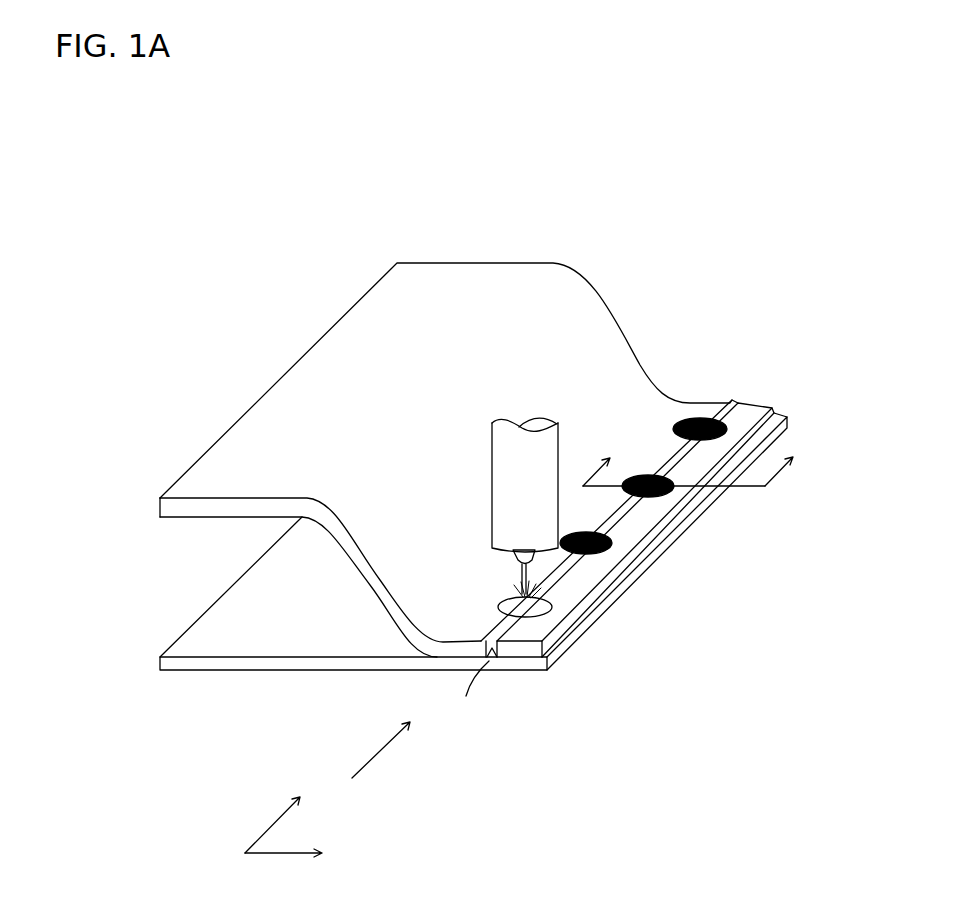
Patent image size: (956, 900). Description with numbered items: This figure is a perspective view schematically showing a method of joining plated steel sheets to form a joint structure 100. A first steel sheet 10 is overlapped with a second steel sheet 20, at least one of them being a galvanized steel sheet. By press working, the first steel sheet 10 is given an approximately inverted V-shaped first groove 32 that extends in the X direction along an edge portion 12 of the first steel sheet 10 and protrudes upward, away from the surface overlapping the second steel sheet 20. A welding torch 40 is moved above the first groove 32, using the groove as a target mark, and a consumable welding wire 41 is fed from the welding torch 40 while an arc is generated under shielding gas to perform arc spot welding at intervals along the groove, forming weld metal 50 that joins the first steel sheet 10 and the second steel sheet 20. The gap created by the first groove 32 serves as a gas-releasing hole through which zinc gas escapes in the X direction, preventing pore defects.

The joint structure 100 is at (594, 199).
The first steel sheet 10 is at (248, 448).
The edge portion 12 is at (657, 527).
The second steel sheet 20 is at (218, 633).
The first groove 32 is at (494, 661).
The welding torch 40 is at (528, 477).
The welding wire 41 is at (517, 572).
The weld metal 50 is at (552, 600).